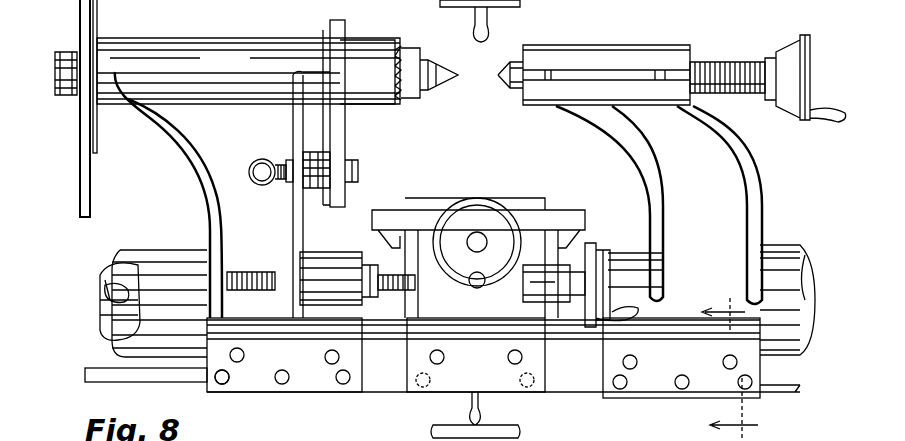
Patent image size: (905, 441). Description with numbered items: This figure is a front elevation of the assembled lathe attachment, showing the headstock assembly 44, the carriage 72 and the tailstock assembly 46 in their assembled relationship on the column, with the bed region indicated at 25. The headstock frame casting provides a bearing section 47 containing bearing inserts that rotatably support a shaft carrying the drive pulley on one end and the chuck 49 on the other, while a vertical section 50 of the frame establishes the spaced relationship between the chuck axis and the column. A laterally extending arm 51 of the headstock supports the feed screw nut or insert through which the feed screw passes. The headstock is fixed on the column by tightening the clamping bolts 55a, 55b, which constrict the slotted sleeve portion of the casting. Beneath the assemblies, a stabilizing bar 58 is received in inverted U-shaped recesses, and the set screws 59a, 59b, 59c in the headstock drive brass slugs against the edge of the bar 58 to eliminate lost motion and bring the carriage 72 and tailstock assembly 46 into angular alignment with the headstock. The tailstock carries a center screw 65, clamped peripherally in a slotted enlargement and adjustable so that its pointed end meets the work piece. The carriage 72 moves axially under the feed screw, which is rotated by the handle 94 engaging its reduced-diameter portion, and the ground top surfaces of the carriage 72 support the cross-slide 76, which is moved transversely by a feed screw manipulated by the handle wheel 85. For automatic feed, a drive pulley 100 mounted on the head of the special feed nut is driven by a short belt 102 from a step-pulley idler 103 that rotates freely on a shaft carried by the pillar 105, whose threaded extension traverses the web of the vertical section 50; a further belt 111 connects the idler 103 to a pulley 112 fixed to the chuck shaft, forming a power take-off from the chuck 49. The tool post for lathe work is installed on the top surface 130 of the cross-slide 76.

The lathe bed 25 is at (744, 369).
The headstock assembly 44 is at (190, 177).
The tailstock assembly 46 is at (772, 195).
The bearing section 47 is at (202, 38).
The chuck 49 is at (382, 40).
The vertical section 50 is at (178, 142).
The laterally extending arm 51 is at (336, 268).
The clamping bolt 55a is at (229, 377).
The clamping bolt 55b is at (325, 362).
The stabilizing bar 58 is at (85, 375).
The set screw 59a is at (224, 391).
The set screw 59b is at (280, 386).
The set screw 59c is at (340, 386).
The center screw 65 is at (728, 62).
The carriage 72 is at (476, 378).
The cross-slide 76 is at (556, 210).
The handle wheel 85 is at (486, 205).
The handle 94 is at (610, 242).
The drive pulley 100 is at (290, 247).
The short belt 102 is at (290, 204).
The step-pulley idler 103 is at (350, 157).
The pillar 105 is at (254, 162).
The belt 111 is at (345, 135).
The pulley 112 is at (330, 32).
The top surface 130 is at (436, 200).